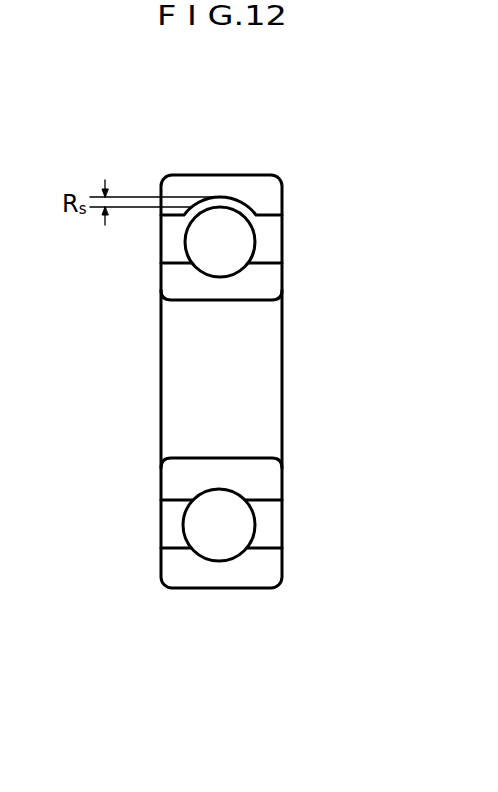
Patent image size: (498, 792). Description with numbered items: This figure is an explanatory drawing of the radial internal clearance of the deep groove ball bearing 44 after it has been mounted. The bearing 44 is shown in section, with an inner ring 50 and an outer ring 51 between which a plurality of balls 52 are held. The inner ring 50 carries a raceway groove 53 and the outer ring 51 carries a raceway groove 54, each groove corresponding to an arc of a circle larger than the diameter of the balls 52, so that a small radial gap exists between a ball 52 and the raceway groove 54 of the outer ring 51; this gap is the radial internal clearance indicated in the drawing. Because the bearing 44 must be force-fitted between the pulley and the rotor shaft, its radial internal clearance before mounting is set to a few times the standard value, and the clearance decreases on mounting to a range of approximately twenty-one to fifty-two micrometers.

The deep groove ball bearing 44 is at (284, 177).
The inner ring 50 is at (267, 280).
The outer ring 51 is at (243, 181).
The balls 52 is at (243, 243).
The raceway groove of the inner ring 53 is at (200, 275).
The raceway groove of the outer ring 54 is at (221, 199).